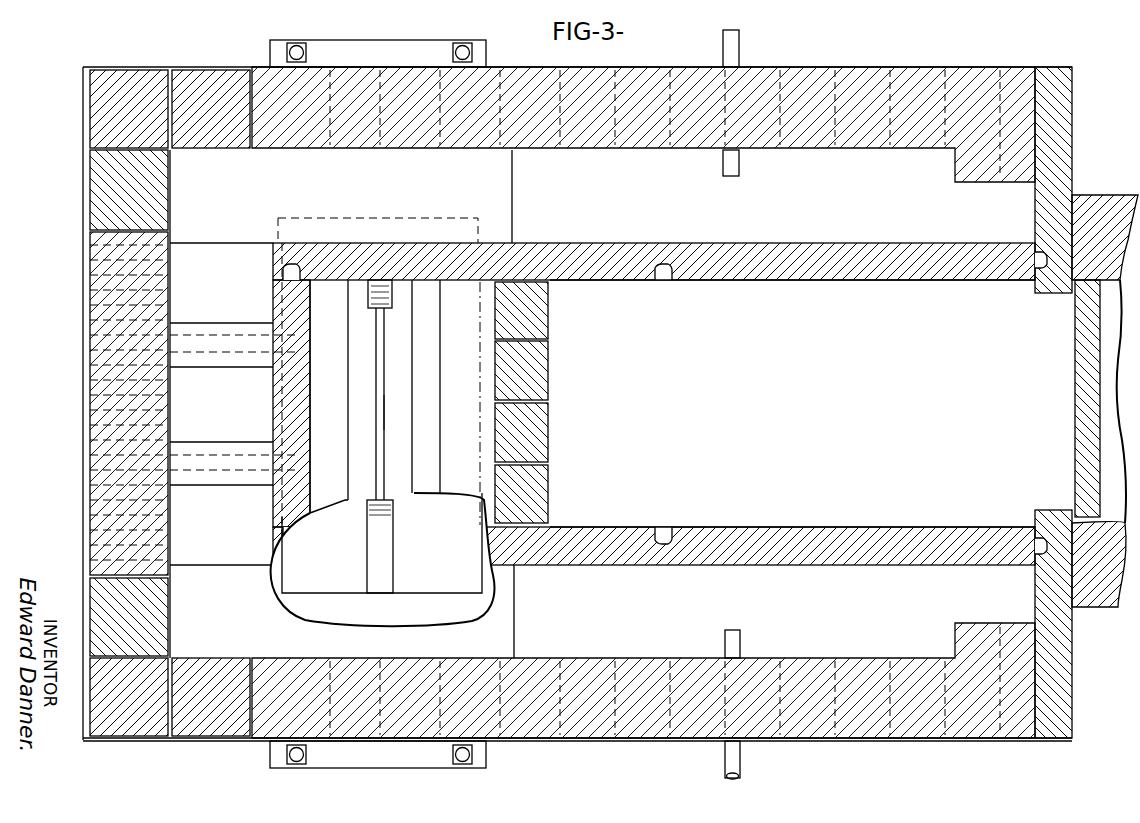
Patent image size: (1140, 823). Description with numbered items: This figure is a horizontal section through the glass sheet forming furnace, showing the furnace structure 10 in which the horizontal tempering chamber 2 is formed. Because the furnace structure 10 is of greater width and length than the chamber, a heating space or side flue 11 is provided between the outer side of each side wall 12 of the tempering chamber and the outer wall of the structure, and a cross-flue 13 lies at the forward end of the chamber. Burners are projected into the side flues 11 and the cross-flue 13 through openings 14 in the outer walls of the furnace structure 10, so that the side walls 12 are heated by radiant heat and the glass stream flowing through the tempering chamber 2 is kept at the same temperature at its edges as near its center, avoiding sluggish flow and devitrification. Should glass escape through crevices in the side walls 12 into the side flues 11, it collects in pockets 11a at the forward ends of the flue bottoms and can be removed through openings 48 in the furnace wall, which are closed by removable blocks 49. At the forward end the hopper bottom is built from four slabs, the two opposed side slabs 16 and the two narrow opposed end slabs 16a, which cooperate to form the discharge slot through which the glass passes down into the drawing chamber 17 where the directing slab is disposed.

The tempering chamber 2 is at (792, 403).
The furnace structure 10 is at (685, 717).
The side flues 11 is at (442, 404).
The pockets 11a is at (383, 409).
The side wall 12 is at (757, 272).
The cross-flue 13 is at (324, 391).
The openings 14 is at (98, 403).
The side slabs 16 is at (328, 570).
The end slabs 16a is at (381, 296).
The drawing chamber 17 is at (385, 412).
The openings 48 is at (172, 69).
The removable blocks 49 is at (225, 86).